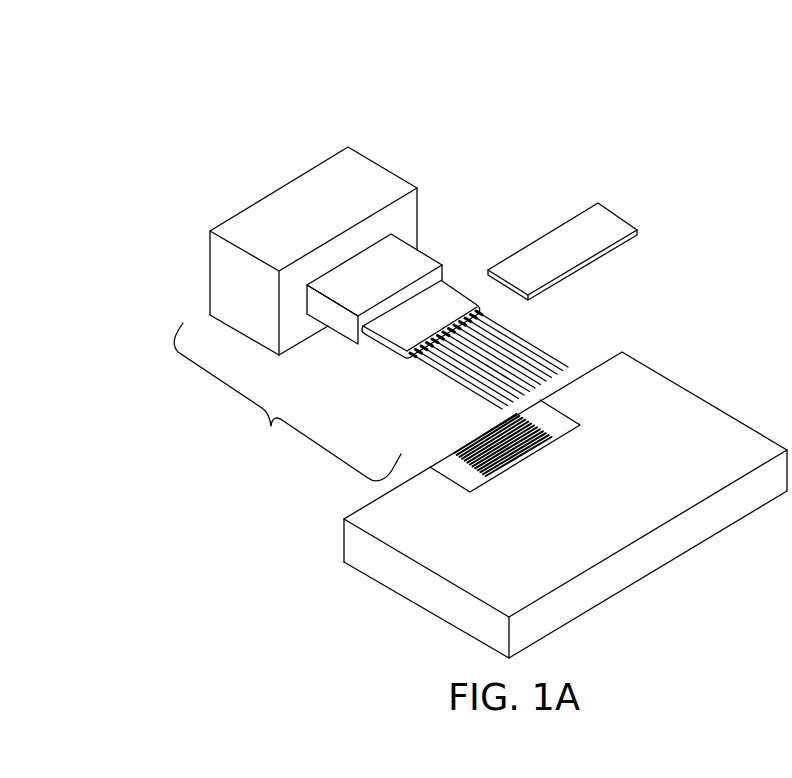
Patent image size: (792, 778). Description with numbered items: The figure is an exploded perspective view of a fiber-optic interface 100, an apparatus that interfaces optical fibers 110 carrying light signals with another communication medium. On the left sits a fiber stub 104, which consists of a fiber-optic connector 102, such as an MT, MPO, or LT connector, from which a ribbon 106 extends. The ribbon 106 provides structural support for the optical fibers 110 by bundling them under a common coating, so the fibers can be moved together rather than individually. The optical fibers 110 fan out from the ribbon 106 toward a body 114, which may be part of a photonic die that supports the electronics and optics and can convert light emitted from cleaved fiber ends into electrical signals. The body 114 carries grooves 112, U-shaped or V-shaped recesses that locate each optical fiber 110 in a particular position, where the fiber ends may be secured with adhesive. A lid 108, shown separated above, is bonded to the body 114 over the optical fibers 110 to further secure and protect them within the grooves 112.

The fiber-optic interface 100 is at (201, 119).
The fiber-optic connector 102 is at (389, 171).
The fiber stub 104 is at (266, 430).
The ribbon 106 is at (400, 350).
The lid 108 is at (608, 210).
The optical fibers 110 is at (547, 353).
The grooves 112 is at (458, 450).
The body 114 is at (618, 594).